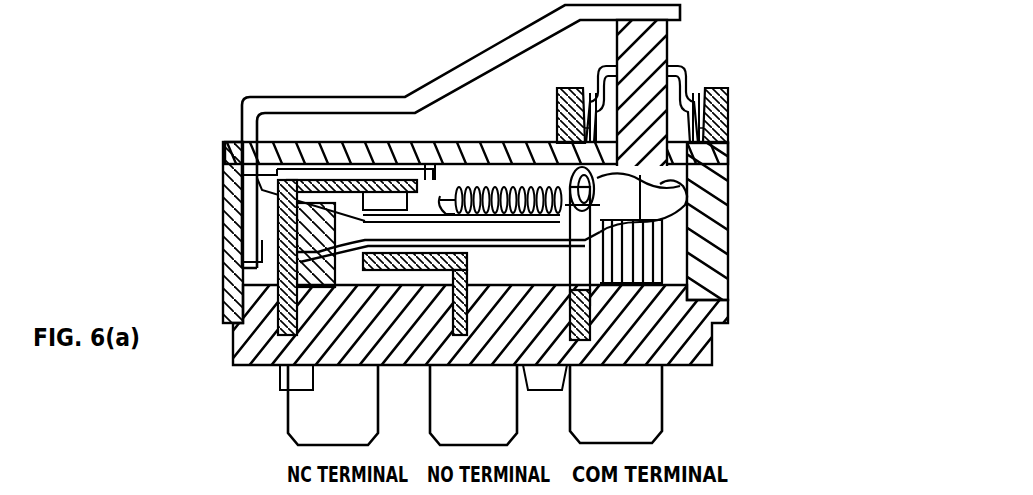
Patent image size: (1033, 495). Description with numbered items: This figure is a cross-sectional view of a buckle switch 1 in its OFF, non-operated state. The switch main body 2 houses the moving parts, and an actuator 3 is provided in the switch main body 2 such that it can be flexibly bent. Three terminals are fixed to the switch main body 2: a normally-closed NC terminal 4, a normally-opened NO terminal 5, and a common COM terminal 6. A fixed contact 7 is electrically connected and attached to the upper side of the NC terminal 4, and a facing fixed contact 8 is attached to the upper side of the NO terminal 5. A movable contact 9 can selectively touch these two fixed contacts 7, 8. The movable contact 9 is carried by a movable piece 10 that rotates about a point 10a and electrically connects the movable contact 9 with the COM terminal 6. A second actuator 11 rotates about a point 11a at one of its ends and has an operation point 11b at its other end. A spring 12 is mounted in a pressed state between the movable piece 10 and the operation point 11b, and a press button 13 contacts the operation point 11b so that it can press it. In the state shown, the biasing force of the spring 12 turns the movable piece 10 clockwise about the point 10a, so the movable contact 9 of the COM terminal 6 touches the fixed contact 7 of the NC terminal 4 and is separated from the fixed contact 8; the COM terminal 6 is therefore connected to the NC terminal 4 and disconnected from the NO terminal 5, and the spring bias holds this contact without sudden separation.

The buckle switch 1 is at (760, 91).
The switch main body 2 is at (718, 264).
The actuator 3 is at (483, 57).
The normally-closed fixed terminal 4 is at (342, 434).
The normally-opened fixed terminal 5 is at (483, 434).
The common terminal 6 is at (635, 434).
The fixed contact 7 is at (432, 143).
The fixed contact 8 is at (470, 260).
The movable contact 9 is at (290, 203).
The movable piece 10 is at (462, 186).
The rotation point of movable piece 10a is at (697, 217).
The second actuator 11 is at (533, 244).
The rotation point of second actuator 11a is at (242, 268).
The operation point 11b is at (690, 190).
The spring 12 is at (512, 145).
The press button 13 is at (663, 52).